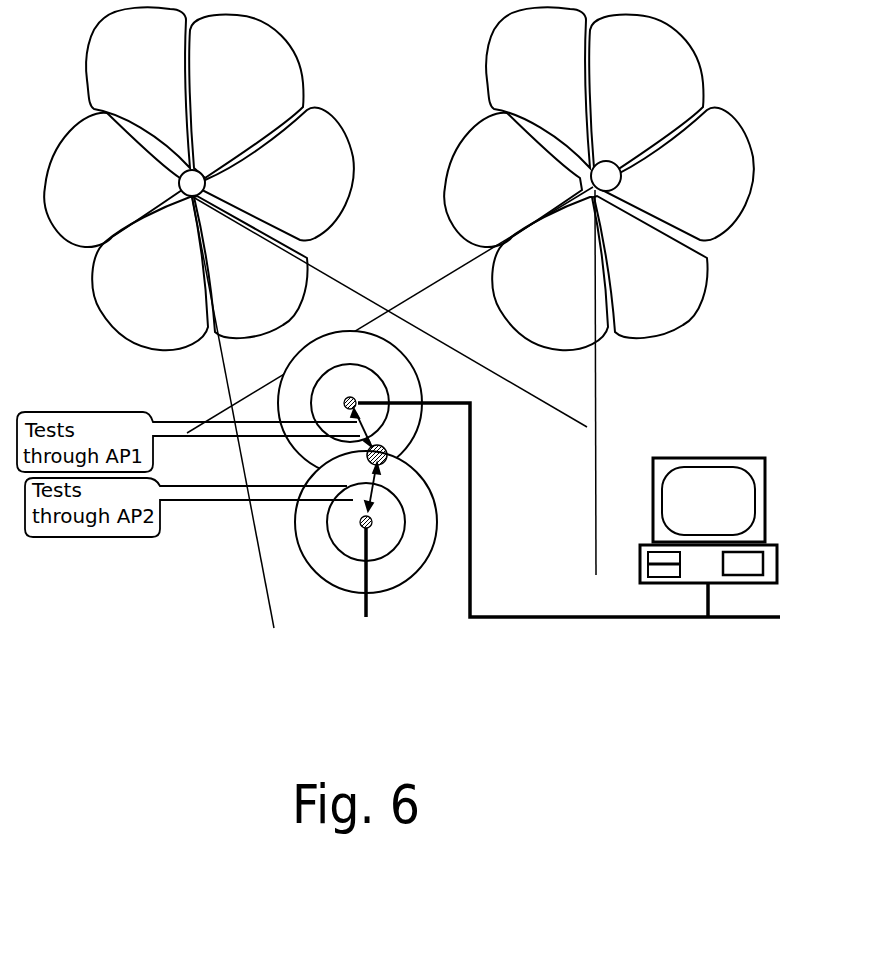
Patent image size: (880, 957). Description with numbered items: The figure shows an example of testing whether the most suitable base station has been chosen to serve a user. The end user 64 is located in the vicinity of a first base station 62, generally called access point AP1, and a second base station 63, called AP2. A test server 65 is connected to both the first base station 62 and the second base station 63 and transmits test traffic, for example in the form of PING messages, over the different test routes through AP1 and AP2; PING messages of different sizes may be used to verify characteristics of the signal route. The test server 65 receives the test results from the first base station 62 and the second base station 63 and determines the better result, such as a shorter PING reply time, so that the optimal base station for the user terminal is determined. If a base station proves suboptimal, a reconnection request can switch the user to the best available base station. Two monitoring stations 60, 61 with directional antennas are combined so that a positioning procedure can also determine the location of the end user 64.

The monitoring station 60 is at (179, 183).
The monitoring station 61 is at (591, 176).
The first base station 62 is at (351, 397).
The second base station 63 is at (361, 526).
The end user 64 is at (388, 462).
The test server 65 is at (734, 458).